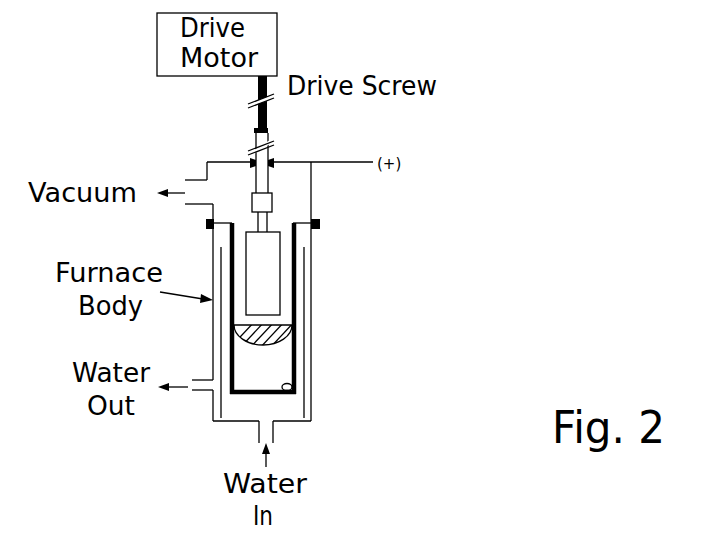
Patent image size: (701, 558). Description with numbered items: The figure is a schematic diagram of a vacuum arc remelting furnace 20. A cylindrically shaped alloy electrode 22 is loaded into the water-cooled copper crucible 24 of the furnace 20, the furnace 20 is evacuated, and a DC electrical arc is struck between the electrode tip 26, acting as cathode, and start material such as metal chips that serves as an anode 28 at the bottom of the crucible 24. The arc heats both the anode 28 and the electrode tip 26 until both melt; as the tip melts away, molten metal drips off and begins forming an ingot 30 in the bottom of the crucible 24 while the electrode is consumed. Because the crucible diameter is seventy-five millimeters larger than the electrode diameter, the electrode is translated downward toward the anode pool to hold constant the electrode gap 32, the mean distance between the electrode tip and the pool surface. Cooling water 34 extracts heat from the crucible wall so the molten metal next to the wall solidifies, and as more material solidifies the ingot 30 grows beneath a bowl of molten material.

The VAR furnace 20 is at (488, 169).
The alloy electrode 22 is at (265, 268).
The water-cooled copper crucible 24 is at (297, 237).
The electrode tip 26 is at (267, 129).
The anode 28 is at (293, 392).
The ingot 30 is at (278, 364).
The electrode gap 32 is at (283, 320).
The cooling water 34 is at (270, 408).